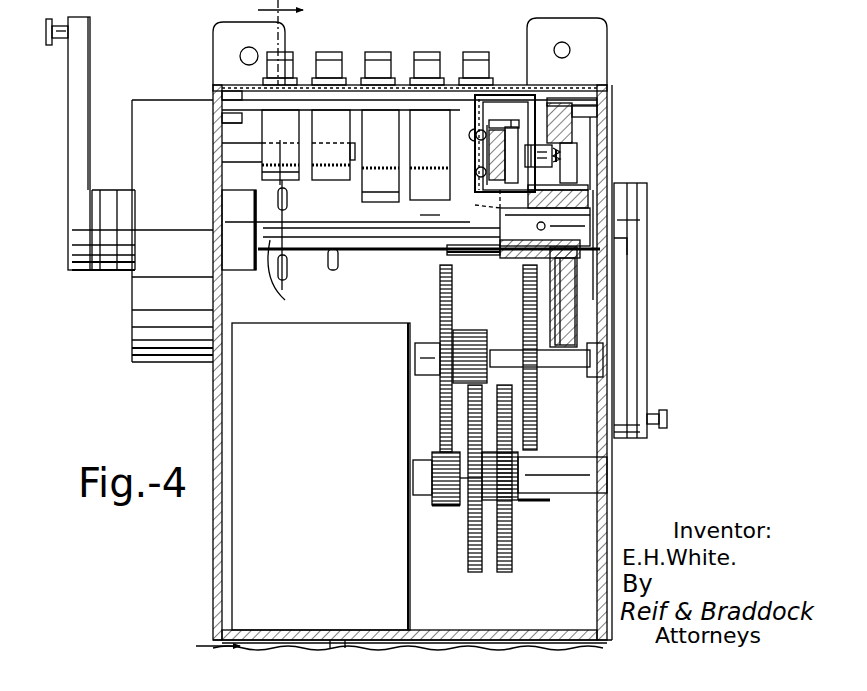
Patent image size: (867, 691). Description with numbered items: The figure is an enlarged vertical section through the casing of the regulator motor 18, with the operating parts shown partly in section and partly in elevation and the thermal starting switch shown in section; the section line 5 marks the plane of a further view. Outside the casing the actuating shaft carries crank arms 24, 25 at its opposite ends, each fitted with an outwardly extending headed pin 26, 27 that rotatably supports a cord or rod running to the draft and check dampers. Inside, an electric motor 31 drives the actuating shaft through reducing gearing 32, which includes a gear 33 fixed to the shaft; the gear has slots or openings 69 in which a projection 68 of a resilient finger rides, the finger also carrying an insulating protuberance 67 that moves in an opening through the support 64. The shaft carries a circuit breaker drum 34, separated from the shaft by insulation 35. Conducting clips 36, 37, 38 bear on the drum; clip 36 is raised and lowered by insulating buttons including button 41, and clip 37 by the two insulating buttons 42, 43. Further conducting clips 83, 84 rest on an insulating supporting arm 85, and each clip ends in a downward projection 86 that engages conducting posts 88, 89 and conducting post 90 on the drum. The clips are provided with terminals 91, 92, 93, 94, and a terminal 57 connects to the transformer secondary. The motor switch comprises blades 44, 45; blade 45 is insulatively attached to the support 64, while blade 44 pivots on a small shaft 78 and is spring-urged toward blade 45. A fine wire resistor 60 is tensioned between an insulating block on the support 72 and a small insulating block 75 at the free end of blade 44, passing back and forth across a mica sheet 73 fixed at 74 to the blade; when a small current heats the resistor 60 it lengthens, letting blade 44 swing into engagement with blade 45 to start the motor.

The section line 5 is at (249, 328).
The regulator motor 18 is at (211, 438).
The crank arm 24 is at (640, 265).
The crank arm 25 is at (82, 83).
The headed pin 26 is at (668, 418).
The headed pin 27 is at (50, 42).
The electric motor 31 is at (267, 406).
The reducing gearing 32 is at (496, 346).
The gear 33 is at (577, 325).
The circuit breaker drum 34 is at (278, 285).
The insulation 35 is at (257, 272).
The conducting clip 36 is at (380, 156).
The conducting clip 37 is at (430, 155).
The conducting clip 38 is at (470, 257).
The insulating button 41 is at (380, 255).
The insulating button 42 is at (420, 202).
The insulating button 43 is at (428, 222).
The motor switch blade 44 is at (572, 120).
The motor switch blade 45 is at (582, 192).
The terminal 57 is at (485, 56).
The resistor 60 is at (476, 147).
The support 64 is at (540, 95).
The insulating protuberance 67 is at (552, 150).
The projection 68 is at (562, 157).
The slots or openings 69 is at (577, 146).
The support 72 is at (476, 112).
The mica sheet 73 is at (476, 181).
The fastening 74 is at (490, 82).
The insulating block 75 is at (489, 160).
The shaft 78 is at (511, 122).
The conducting clip 83 is at (280, 147).
The conducting clip 84 is at (333, 145).
The insulating supporting arm 85 is at (235, 160).
The downward projection 86 is at (262, 172).
The conducting post 88 is at (288, 200).
The conducting post 89 is at (288, 270).
The conducting post 90 is at (338, 262).
The terminal 91 is at (288, 57).
The terminal 92 is at (338, 55).
The terminal 93 is at (383, 50).
The terminal 94 is at (428, 52).